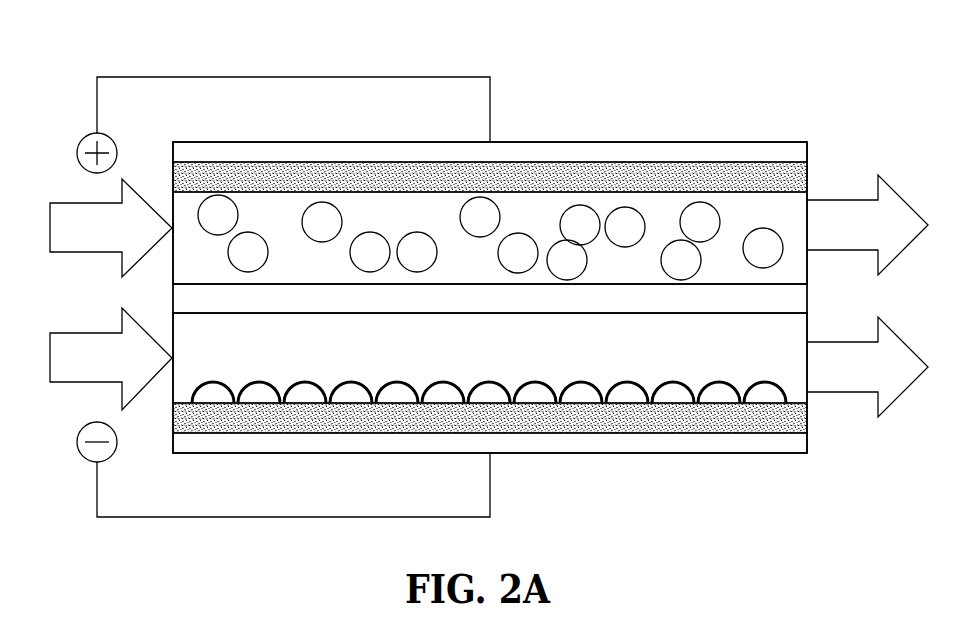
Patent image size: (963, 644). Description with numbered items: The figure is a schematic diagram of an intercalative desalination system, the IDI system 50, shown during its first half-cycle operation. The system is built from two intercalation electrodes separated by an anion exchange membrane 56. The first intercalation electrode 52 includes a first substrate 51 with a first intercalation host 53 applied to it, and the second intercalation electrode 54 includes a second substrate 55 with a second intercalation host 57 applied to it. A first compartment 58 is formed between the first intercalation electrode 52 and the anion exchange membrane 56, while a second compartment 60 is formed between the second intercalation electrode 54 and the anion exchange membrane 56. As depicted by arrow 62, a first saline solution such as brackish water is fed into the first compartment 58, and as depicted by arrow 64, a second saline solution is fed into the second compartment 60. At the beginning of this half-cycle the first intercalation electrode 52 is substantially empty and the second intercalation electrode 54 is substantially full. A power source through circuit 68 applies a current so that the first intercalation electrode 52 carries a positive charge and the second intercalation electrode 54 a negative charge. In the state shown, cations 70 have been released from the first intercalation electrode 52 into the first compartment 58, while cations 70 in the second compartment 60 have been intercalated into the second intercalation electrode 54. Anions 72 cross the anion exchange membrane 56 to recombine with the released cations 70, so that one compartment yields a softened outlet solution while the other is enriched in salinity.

The IDI system 50 is at (800, 492).
The first substrate 51 is at (807, 150).
The first intercalation electrode 52 is at (708, 122).
The first intercalation host 53 is at (807, 176).
The second intercalation electrode 54 is at (609, 485).
The second substrate 55 is at (807, 440).
The anion exchange membrane 56 is at (807, 298).
The second intercalation host 57 is at (807, 418).
The first compartment 58 is at (408, 221).
The second compartment 60 is at (503, 356).
The arrow 62 is at (50, 228).
The arrow 64 is at (50, 358).
The circuit 68 is at (228, 77).
The cations 70 is at (397, 405).
The anions 72 is at (625, 207).